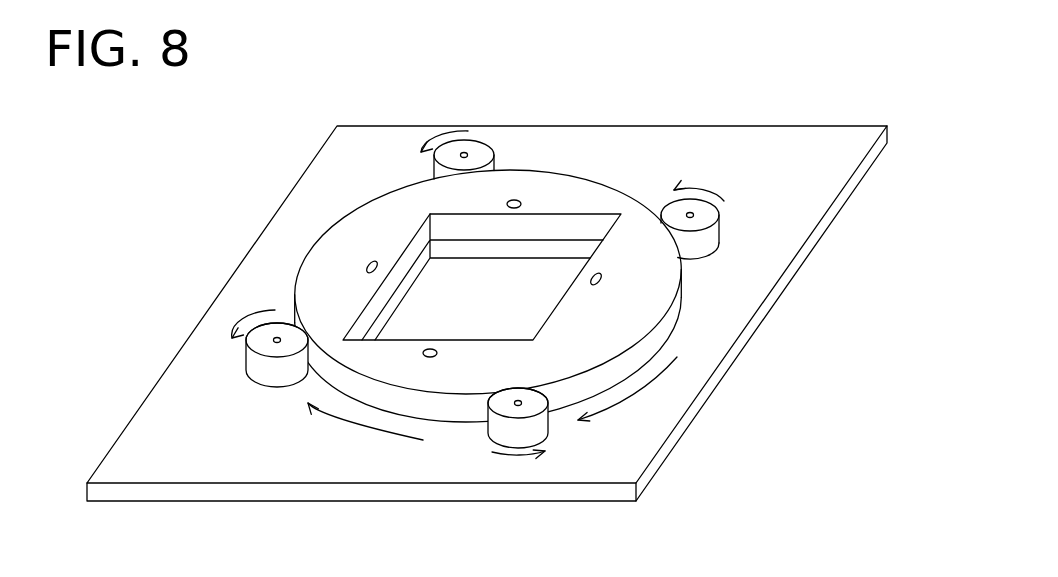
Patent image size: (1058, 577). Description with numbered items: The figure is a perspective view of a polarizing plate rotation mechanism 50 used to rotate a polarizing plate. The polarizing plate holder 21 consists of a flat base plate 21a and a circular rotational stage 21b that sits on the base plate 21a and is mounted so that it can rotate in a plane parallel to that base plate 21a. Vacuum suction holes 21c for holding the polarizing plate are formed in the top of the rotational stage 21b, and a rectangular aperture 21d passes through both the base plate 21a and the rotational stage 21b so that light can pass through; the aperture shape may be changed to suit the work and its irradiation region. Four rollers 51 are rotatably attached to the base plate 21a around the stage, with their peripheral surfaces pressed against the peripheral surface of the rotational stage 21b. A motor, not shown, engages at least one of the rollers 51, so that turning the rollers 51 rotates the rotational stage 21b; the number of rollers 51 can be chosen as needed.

The polarizing plate rotation mechanism 50 is at (207, 186).
The polarizing plate holder 21 is at (662, 164).
The base plate 21a is at (769, 144).
The rotational stage 21b is at (621, 318).
The vacuum suction holes 21c is at (606, 279).
The aperture 21d is at (571, 224).
The rollers 51 is at (472, 142).